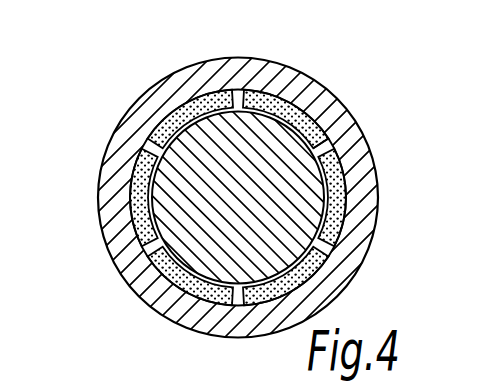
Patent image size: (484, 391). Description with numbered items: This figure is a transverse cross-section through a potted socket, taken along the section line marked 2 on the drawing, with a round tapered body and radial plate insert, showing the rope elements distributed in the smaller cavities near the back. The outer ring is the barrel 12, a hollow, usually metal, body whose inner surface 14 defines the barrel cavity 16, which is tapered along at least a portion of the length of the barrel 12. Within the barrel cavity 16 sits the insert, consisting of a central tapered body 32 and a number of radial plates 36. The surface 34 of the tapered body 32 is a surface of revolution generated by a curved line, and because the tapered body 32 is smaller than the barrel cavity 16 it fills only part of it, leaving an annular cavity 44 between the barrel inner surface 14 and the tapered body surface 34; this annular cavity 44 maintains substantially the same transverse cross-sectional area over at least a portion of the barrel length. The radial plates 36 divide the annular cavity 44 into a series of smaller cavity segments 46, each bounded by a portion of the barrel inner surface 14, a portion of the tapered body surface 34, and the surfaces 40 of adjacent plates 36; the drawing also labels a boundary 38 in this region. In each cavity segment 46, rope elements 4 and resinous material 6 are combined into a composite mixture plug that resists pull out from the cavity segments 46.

The section line / liner segment 2 is at (325, 243).
The rope elements 4 is at (320, 264).
The resinous material 6 is at (242, 284).
The barrel 12 is at (288, 72).
The inner surface 14 is at (183, 112).
The barrel cavity 16 is at (158, 150).
The tapered body 32 is at (302, 104).
The surface 34 is at (335, 122).
The radial plates 36 is at (338, 138).
The gap between liner segments 38 is at (330, 148).
The surfaces 40 is at (343, 165).
The annular cavity 44 is at (343, 191).
The cavity segments 46 is at (330, 216).